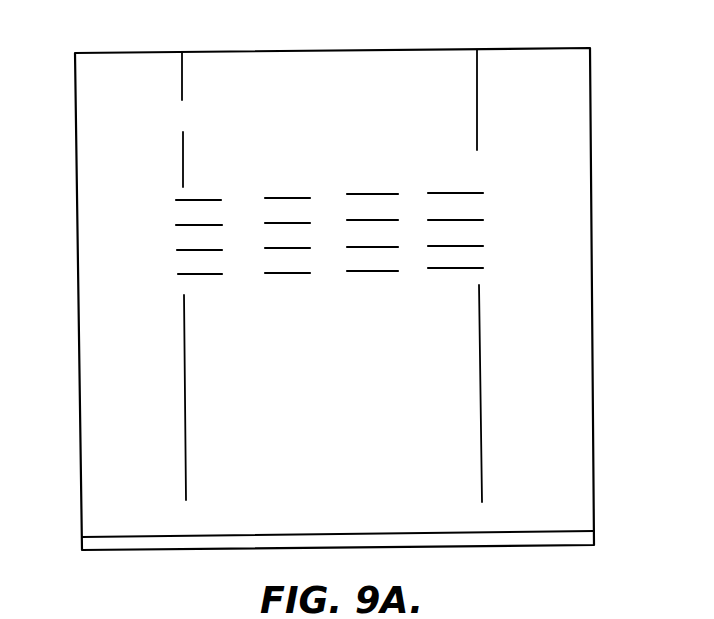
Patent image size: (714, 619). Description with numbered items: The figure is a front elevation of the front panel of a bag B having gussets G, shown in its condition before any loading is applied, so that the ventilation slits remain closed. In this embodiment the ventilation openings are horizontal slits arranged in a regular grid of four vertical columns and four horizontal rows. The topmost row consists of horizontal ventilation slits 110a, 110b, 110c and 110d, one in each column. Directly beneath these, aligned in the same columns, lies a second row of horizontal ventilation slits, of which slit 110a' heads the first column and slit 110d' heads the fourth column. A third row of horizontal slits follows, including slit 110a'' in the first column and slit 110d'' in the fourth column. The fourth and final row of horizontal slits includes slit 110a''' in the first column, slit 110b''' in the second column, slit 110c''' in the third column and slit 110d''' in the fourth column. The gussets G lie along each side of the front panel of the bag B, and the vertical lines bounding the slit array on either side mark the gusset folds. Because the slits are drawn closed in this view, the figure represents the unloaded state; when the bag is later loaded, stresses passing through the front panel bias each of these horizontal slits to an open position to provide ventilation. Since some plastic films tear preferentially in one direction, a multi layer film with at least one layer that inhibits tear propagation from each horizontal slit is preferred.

The horizontal ventilation slit 110a is at (214, 169).
The horizontal ventilation slit 110a' is at (155, 209).
The horizontal slit 110a'' is at (155, 243).
The horizontal slit 110a''' is at (155, 282).
The horizontal ventilation slit 110b is at (293, 168).
The horizontal slit 110b''' is at (260, 295).
The horizontal ventilation slit 110c is at (369, 166).
The horizontal slit 110c''' is at (405, 292).
The horizontal ventilation slit 110d is at (449, 165).
The horizontal ventilation slit 110d' is at (504, 204).
The horizontal slit 110d'' is at (504, 238).
The horizontal slit 110d''' is at (504, 278).
The gusset G is at (170, 317).
The bag B is at (620, 284).